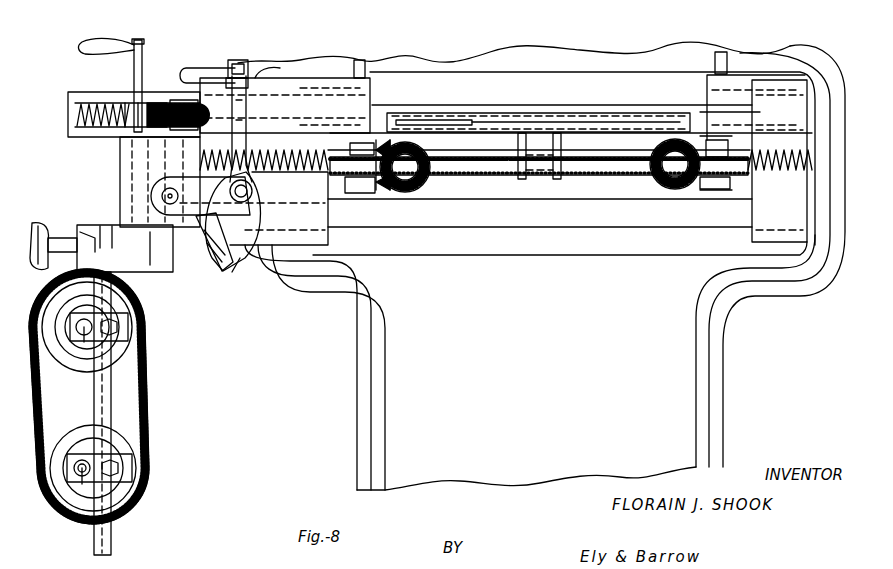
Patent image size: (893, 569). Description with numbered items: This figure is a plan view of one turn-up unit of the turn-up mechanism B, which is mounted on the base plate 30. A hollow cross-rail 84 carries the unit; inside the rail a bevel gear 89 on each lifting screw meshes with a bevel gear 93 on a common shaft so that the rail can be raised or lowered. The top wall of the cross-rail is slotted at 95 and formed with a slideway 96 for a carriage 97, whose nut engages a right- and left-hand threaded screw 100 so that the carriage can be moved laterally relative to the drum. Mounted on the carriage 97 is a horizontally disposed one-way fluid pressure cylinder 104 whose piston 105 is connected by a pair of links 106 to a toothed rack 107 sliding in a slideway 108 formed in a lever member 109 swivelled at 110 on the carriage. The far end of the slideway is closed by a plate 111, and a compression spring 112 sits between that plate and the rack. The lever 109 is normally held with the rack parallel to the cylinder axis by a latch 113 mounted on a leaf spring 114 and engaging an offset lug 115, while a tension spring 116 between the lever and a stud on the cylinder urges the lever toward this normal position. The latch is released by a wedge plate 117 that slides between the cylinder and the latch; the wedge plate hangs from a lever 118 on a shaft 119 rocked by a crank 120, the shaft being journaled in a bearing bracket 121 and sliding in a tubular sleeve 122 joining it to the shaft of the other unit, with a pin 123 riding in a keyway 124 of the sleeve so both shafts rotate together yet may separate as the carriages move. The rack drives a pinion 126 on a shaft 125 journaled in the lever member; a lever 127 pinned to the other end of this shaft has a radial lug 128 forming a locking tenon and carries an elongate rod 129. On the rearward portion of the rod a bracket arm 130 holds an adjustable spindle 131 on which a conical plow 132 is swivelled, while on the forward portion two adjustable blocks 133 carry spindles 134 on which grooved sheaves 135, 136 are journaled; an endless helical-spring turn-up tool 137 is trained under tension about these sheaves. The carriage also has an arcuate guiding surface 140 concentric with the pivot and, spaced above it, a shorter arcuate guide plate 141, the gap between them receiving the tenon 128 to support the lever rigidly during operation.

The base plate 30 is at (405, 386).
The cross-rail 84 is at (536, 243).
The bevel gear 89 is at (413, 191).
The bevel gear 93 is at (384, 188).
The slot 95 is at (585, 205).
The slideway 96 is at (512, 80).
The carriage 97 is at (320, 238).
The screw 100 is at (592, 166).
The cylinder 104 is at (340, 80).
The piston 105 is at (372, 76).
The links 106 is at (300, 100).
The toothed rack 107 is at (176, 100).
The slideway 108 is at (102, 105).
The lever member 109 is at (121, 168).
The swivel 110 is at (160, 196).
The plate 111 is at (68, 112).
The compression spring 112 is at (92, 128).
The latch 113 is at (222, 78).
The leaf spring 114 is at (262, 72).
The offset lug 115 is at (240, 92).
The tension spring 116 is at (290, 172).
The wedge plate 117 is at (246, 68).
The lever 118 is at (240, 66).
The shaft 119 is at (300, 110).
The crank 120 is at (138, 40).
The bearing bracket 121 is at (254, 197).
The tubular sleeve 122 is at (548, 105).
The pin 123 is at (403, 120).
The keyway 124 is at (460, 118).
The shaft 125 is at (133, 186).
The pinion 126 is at (155, 103).
The lever 127 is at (164, 274).
The lug 128 is at (84, 234).
The rod 129 is at (112, 530).
The bracket arm 130 is at (110, 230).
The spindle 131 is at (62, 238).
The plow 132 is at (36, 222).
The block 133 is at (130, 327).
The spindle 134 is at (84, 335).
The sheave 135 is at (150, 372).
The sheave 136 is at (134, 482).
The turn-up tool 137 is at (142, 336).
The guiding surface 140 is at (214, 250).
The guide plate 141 is at (236, 266).
The turn-up mechanism B is at (167, 371).